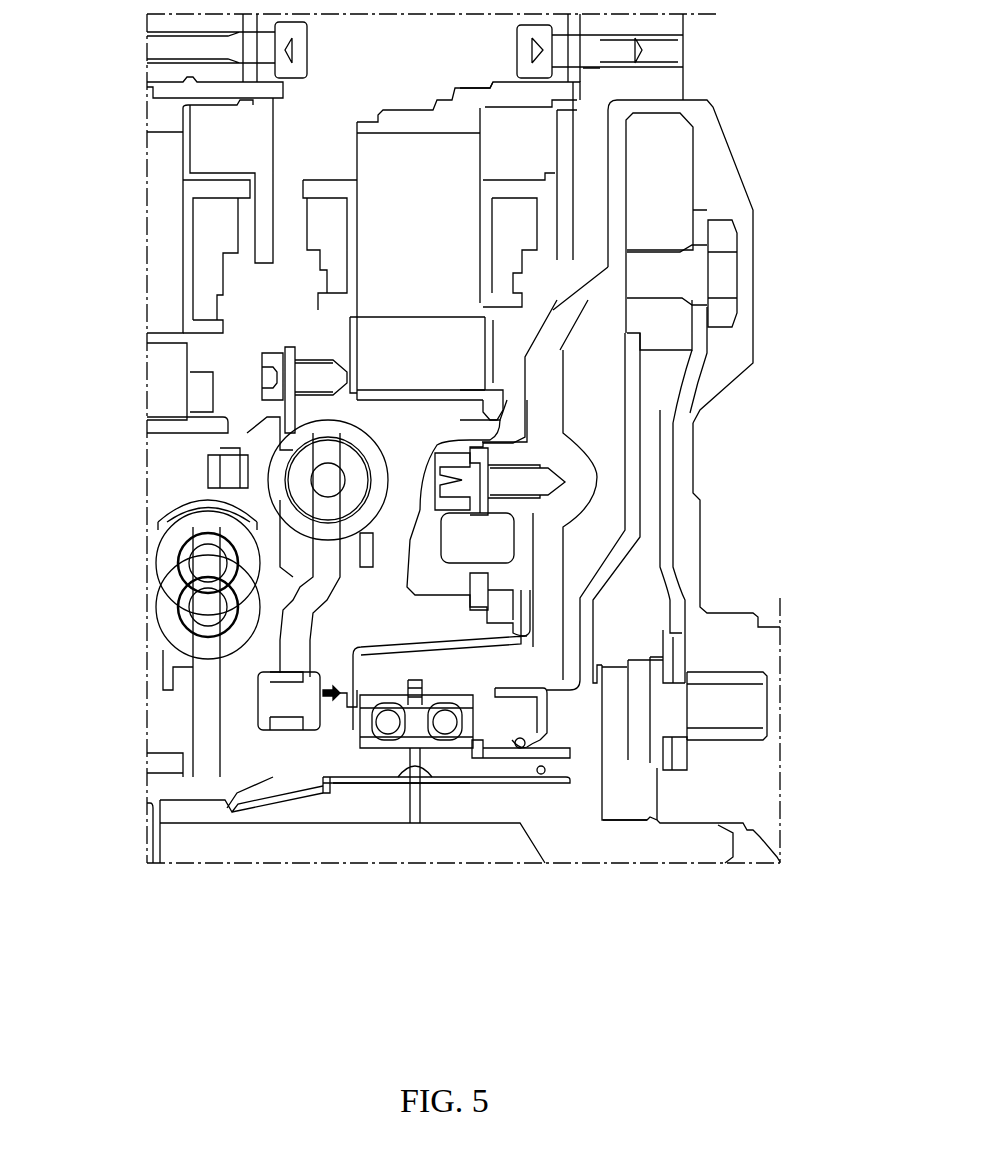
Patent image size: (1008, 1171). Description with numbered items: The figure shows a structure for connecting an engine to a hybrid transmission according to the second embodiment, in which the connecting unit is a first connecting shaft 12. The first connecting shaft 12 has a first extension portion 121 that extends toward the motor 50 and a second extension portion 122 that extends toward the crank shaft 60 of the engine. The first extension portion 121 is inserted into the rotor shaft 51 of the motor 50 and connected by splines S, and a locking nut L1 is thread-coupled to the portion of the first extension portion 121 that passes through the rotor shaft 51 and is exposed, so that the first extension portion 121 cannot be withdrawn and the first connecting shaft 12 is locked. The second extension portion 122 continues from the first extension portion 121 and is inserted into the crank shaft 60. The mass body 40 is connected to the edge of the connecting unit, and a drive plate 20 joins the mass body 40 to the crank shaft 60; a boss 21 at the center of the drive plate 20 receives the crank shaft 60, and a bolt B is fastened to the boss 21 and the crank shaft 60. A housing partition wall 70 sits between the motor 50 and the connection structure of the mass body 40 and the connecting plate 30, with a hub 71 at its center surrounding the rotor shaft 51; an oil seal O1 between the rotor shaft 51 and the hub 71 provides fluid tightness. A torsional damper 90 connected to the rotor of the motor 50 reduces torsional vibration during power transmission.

The first connecting shaft 12 is at (663, 935).
The first extension portion 121 is at (480, 813).
The second extension portion 122 is at (620, 850).
The drive plate 20 is at (668, 478).
The boss 21 is at (680, 753).
The connecting plate 30 is at (633, 382).
The mass body 40 is at (685, 138).
The motor 50 is at (353, 149).
The rotor shaft 51 is at (442, 767).
The crank shaft 60 is at (753, 803).
The housing partition wall 70 is at (575, 300).
The hub 71 is at (370, 678).
The torsional damper 90 is at (170, 503).
The bolt B is at (753, 713).
The oil seal O1 is at (543, 717).
The locking nut L1 is at (292, 763).
The splines S is at (370, 780).